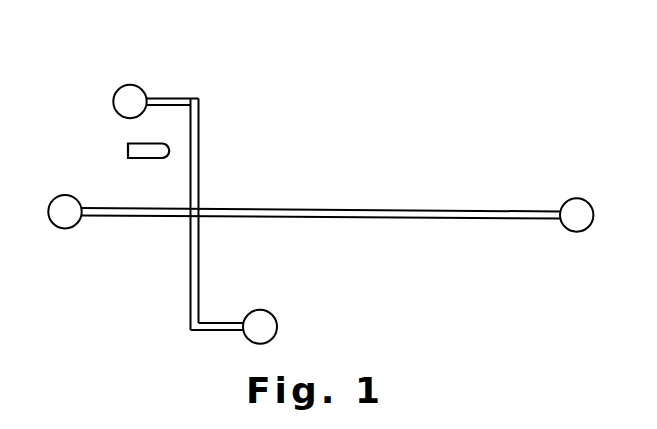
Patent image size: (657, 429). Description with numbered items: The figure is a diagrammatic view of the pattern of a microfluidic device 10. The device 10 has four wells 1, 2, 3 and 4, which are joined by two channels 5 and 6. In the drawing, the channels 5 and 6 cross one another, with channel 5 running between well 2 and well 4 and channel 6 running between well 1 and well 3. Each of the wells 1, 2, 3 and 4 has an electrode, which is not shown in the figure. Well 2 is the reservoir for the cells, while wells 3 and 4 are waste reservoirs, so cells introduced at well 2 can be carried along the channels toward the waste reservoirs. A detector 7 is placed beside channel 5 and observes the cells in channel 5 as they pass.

The device 10 is at (470, 84).
The well 1 is at (48, 213).
The well 2 is at (113, 103).
The well 3 is at (593, 213).
The well 4 is at (277, 325).
The channel 5 is at (199, 171).
The channel 6 is at (350, 209).
The detector 7 is at (127, 151).